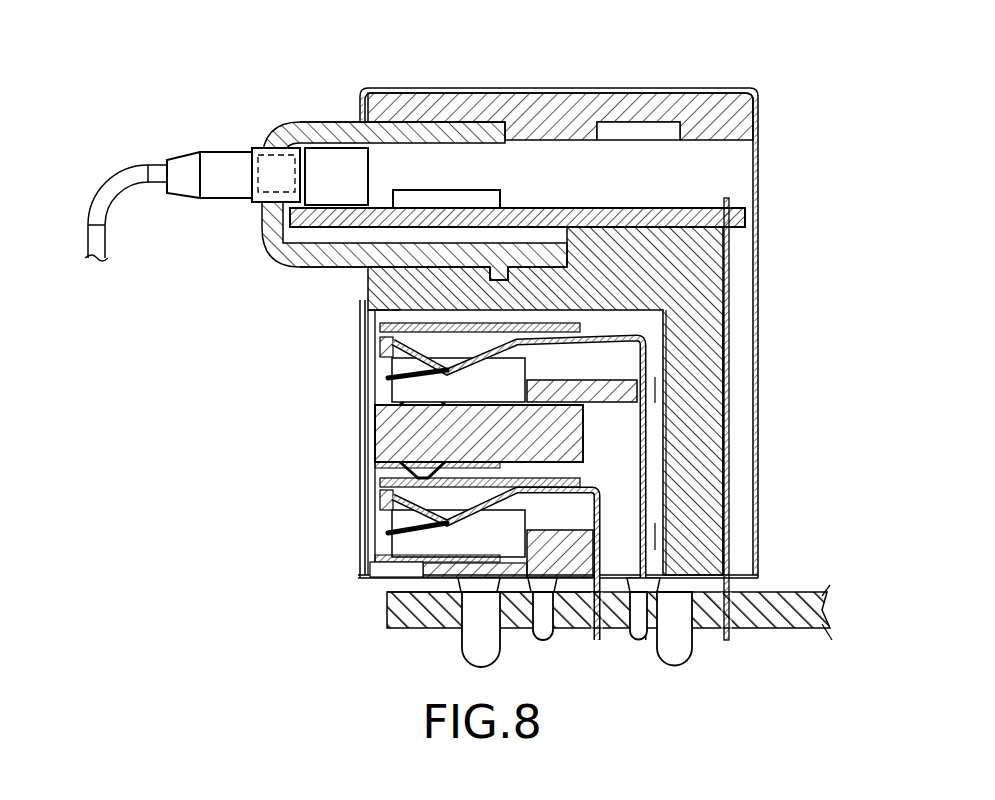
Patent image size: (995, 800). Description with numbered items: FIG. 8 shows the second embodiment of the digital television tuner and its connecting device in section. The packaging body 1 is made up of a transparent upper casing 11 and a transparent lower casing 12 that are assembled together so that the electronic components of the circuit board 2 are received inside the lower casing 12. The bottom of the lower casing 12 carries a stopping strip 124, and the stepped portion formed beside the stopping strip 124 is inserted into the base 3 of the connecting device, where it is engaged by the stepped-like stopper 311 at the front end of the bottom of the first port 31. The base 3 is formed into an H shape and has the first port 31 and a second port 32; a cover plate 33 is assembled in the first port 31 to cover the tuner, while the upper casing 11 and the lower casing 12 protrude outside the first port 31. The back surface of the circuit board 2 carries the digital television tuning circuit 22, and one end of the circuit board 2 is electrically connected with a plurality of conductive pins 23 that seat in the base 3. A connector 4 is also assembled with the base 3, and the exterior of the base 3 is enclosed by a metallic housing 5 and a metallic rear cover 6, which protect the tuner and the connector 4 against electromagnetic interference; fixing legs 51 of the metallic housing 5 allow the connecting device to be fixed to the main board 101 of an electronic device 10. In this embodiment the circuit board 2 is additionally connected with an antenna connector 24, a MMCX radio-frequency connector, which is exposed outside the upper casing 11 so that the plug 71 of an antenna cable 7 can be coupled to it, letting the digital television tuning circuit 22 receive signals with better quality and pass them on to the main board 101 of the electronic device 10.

The packaging body 1 is at (318, 120).
The upper casing 11 is at (290, 128).
The lower casing 12 is at (295, 262).
The stopping strip 124 is at (373, 320).
The circuit board 2 is at (335, 222).
The digital television tuning circuit 22 is at (447, 197).
The conductive pins 23 is at (730, 347).
The antenna connector 24 is at (333, 160).
The base 3 is at (700, 280).
The first port 31 is at (628, 130).
The stopper 311 is at (370, 297).
The second port 32 is at (655, 470).
The cover plate 33 is at (690, 97).
The connector 4 is at (368, 513).
The metallic housing 5 is at (366, 425).
The fixing legs 51 is at (683, 636).
The rear cover 6 is at (758, 190).
The antenna cable 7 is at (105, 185).
The cable plug 71 is at (222, 158).
The electronic device 10 is at (421, 629).
The main board 101 is at (400, 600).